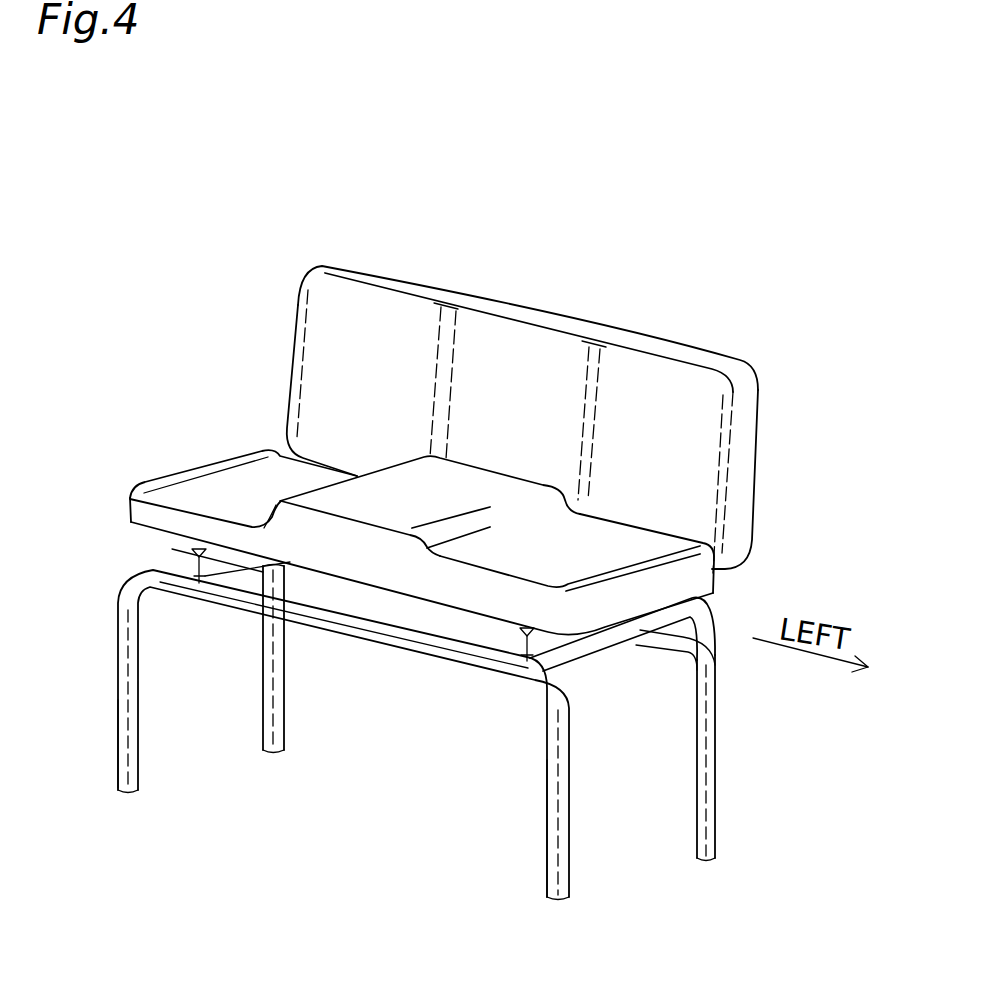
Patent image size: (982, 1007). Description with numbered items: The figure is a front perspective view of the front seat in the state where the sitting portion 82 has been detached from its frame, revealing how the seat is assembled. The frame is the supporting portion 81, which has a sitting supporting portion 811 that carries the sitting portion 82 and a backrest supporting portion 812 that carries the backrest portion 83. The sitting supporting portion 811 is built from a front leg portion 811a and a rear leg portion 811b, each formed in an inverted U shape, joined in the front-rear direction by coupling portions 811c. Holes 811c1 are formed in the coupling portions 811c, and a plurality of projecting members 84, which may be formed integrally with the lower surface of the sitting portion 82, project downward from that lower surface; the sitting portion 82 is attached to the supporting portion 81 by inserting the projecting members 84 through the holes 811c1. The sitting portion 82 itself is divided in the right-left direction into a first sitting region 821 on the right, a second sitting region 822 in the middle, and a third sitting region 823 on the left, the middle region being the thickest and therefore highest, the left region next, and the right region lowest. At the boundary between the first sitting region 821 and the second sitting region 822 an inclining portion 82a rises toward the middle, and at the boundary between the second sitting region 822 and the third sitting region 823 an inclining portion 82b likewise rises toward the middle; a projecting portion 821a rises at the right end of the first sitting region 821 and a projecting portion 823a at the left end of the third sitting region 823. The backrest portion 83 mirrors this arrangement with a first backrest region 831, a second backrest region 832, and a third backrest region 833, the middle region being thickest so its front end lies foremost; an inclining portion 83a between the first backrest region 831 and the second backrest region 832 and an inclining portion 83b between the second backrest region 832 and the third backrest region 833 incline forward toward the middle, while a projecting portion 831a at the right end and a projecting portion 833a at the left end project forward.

The supporting portion 81 is at (115, 817).
The sitting supporting portion 811 is at (105, 695).
The front leg portion 811a is at (578, 645).
The rear leg portion 811b is at (712, 830).
The coupling portion 811c is at (246, 614).
The hole 811c1 is at (222, 602).
The backrest supporting portion 812 is at (683, 343).
The sitting portion 82 is at (133, 452).
The first sitting region 821 is at (210, 500).
The projecting portion 821a is at (243, 460).
The second sitting region 822 is at (368, 497).
The third sitting region 823 is at (492, 552).
The projecting portion 823a is at (635, 605).
The inclining portion 82a is at (273, 527).
The inclining portion 82b is at (445, 545).
The backrest portion 83 is at (376, 240).
The first backrest region 831 is at (388, 320).
The projecting portion 831a is at (300, 318).
The second backrest region 832 is at (525, 355).
The third backrest region 833 is at (660, 380).
The projecting portion 833a is at (730, 410).
The inclining portion 83a is at (455, 340).
The inclining portion 83b is at (598, 365).
The projecting member 84 is at (197, 585).